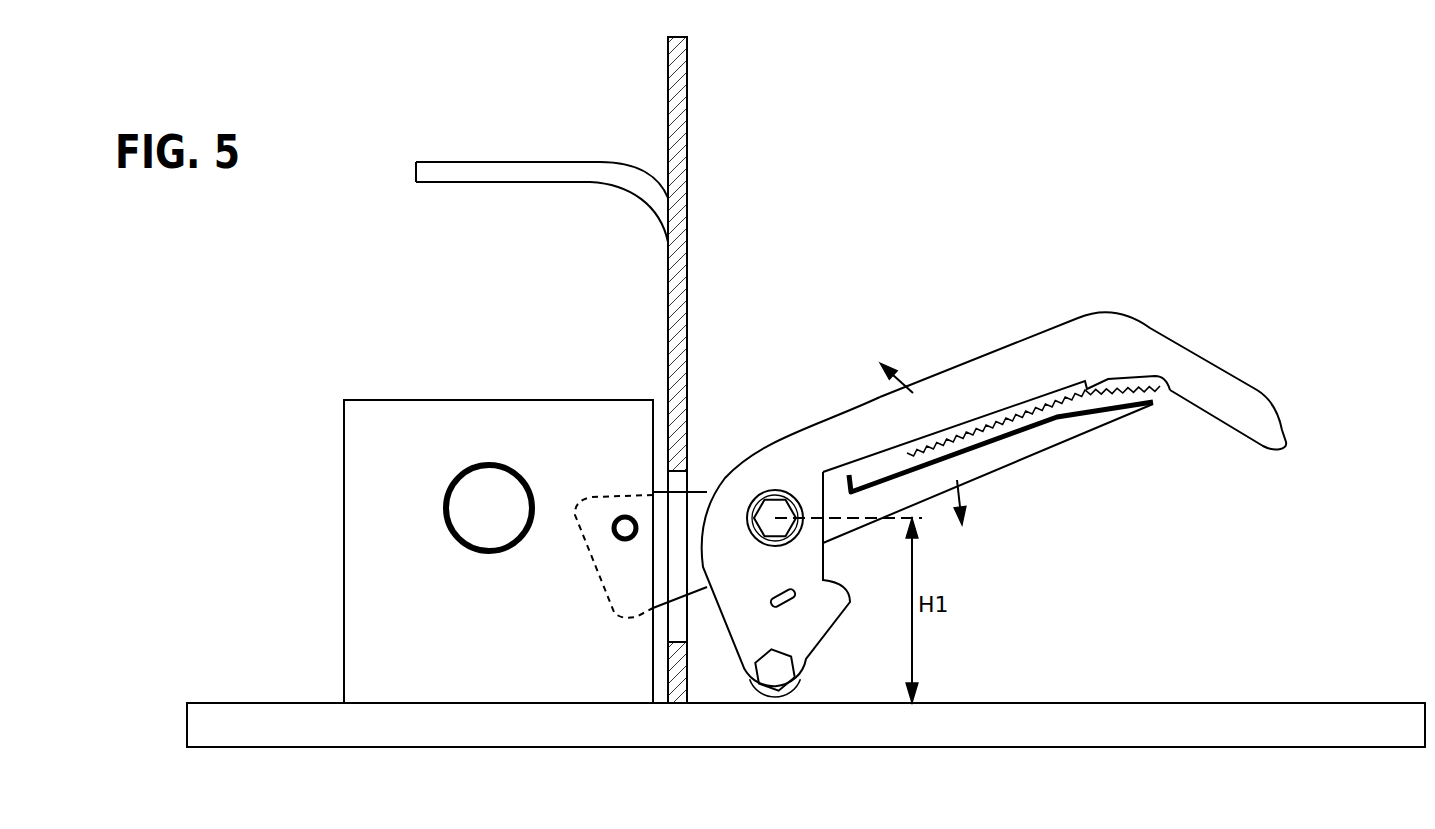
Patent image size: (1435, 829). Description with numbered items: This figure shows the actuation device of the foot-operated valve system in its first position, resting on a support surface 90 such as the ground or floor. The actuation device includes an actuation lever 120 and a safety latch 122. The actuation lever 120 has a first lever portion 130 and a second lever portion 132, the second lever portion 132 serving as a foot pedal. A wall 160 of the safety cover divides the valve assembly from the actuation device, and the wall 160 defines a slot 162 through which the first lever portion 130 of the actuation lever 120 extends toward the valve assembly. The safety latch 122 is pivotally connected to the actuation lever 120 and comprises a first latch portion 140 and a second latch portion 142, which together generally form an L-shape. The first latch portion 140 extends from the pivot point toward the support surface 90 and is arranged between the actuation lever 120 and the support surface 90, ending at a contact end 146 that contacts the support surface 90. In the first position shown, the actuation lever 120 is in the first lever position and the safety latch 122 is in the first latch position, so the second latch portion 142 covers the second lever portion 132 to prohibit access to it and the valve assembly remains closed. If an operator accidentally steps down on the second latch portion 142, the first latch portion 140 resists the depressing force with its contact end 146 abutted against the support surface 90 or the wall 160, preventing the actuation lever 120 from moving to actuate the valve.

The support surface 90 is at (1278, 705).
The actuation lever 120 is at (1103, 476).
The safety latch 122 is at (1005, 269).
The first lever portion 130 is at (696, 513).
The second lever portion 132 is at (997, 462).
The first latch portion 140 is at (810, 572).
The second latch portion 142 is at (1035, 348).
The contact end 146 is at (777, 699).
The wall 160 is at (677, 157).
The slot 162 is at (678, 483).